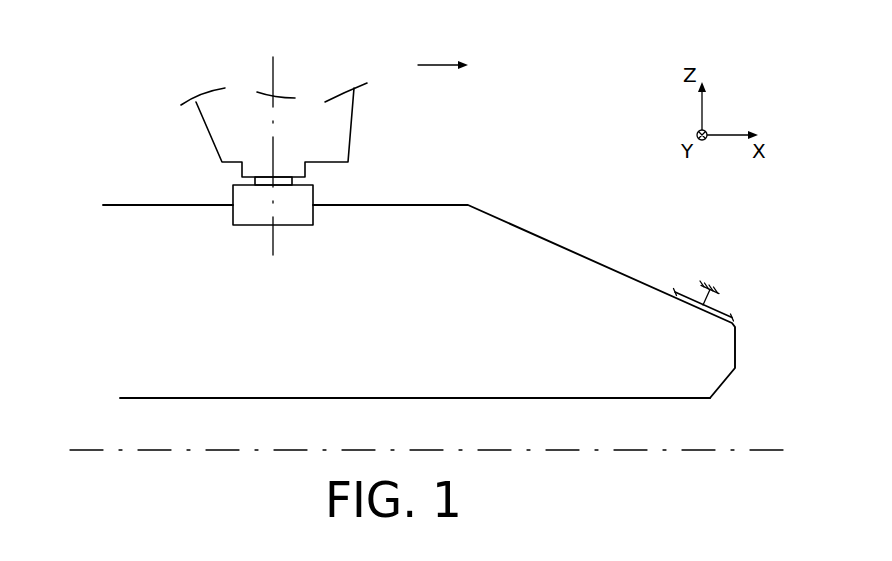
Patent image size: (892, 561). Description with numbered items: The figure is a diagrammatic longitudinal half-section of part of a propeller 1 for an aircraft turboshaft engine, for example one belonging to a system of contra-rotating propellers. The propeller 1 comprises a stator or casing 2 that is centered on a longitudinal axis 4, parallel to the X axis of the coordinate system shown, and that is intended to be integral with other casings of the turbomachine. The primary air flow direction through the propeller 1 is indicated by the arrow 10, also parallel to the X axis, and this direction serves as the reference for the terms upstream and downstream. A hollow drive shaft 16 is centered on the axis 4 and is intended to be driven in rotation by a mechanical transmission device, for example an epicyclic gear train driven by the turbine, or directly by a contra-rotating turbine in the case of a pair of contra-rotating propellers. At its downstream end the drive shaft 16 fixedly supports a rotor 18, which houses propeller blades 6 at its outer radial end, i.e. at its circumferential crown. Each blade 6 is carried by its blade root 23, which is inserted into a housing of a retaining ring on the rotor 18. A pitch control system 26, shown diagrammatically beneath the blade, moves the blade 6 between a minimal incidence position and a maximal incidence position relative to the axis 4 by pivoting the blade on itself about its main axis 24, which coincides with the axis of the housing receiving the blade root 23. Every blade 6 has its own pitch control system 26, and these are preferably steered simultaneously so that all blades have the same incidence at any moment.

The propeller 1 is at (450, 135).
The stator 2 is at (717, 297).
The longitudinal axis 4 is at (82, 450).
The propeller blade 6 is at (197, 126).
The arrow 10 is at (442, 63).
The drive shaft 16 is at (320, 397).
The rotor 18 is at (560, 245).
The blade root 23 is at (303, 180).
The main axis 24 is at (273, 63).
The pitch control system 26 is at (236, 240).